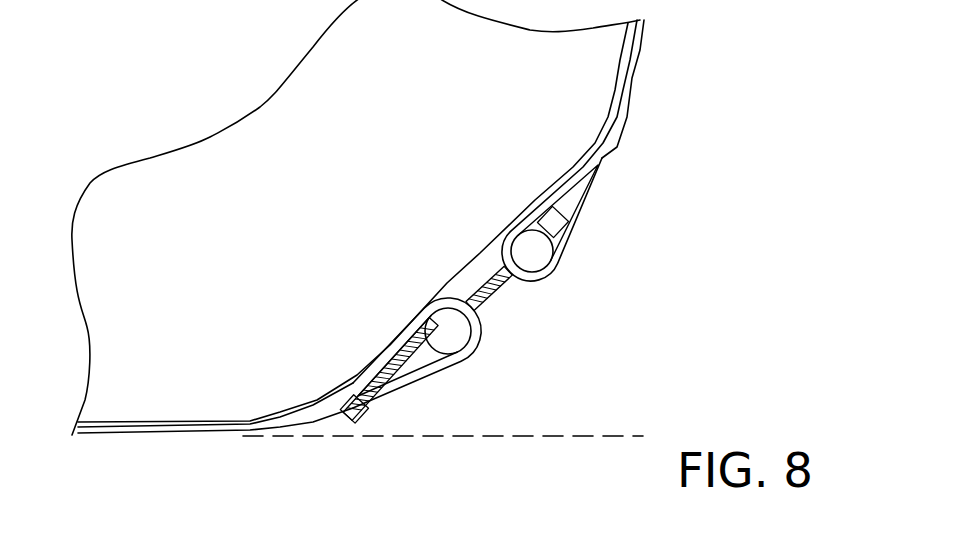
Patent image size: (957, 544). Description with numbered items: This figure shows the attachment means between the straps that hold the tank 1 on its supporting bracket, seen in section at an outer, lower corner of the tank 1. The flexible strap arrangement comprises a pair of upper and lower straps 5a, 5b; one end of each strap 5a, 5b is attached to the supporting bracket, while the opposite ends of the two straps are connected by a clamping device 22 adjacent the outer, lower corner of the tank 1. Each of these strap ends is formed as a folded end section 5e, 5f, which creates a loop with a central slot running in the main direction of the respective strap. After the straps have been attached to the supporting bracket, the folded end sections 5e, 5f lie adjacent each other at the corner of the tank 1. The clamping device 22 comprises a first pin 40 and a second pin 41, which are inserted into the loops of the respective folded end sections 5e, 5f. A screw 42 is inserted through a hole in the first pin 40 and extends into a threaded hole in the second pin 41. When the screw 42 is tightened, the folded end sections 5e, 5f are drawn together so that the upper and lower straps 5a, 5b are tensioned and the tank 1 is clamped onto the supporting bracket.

The tank 1 is at (366, 201).
The upper strap 5a is at (632, 80).
The lower strap 5b is at (230, 428).
The folded end section 5e is at (593, 197).
The folded end section 5f is at (430, 373).
The clamping device 22 is at (631, 222).
The first pin 40 is at (535, 253).
The second pin 41 is at (452, 335).
The screw 42 is at (500, 293).